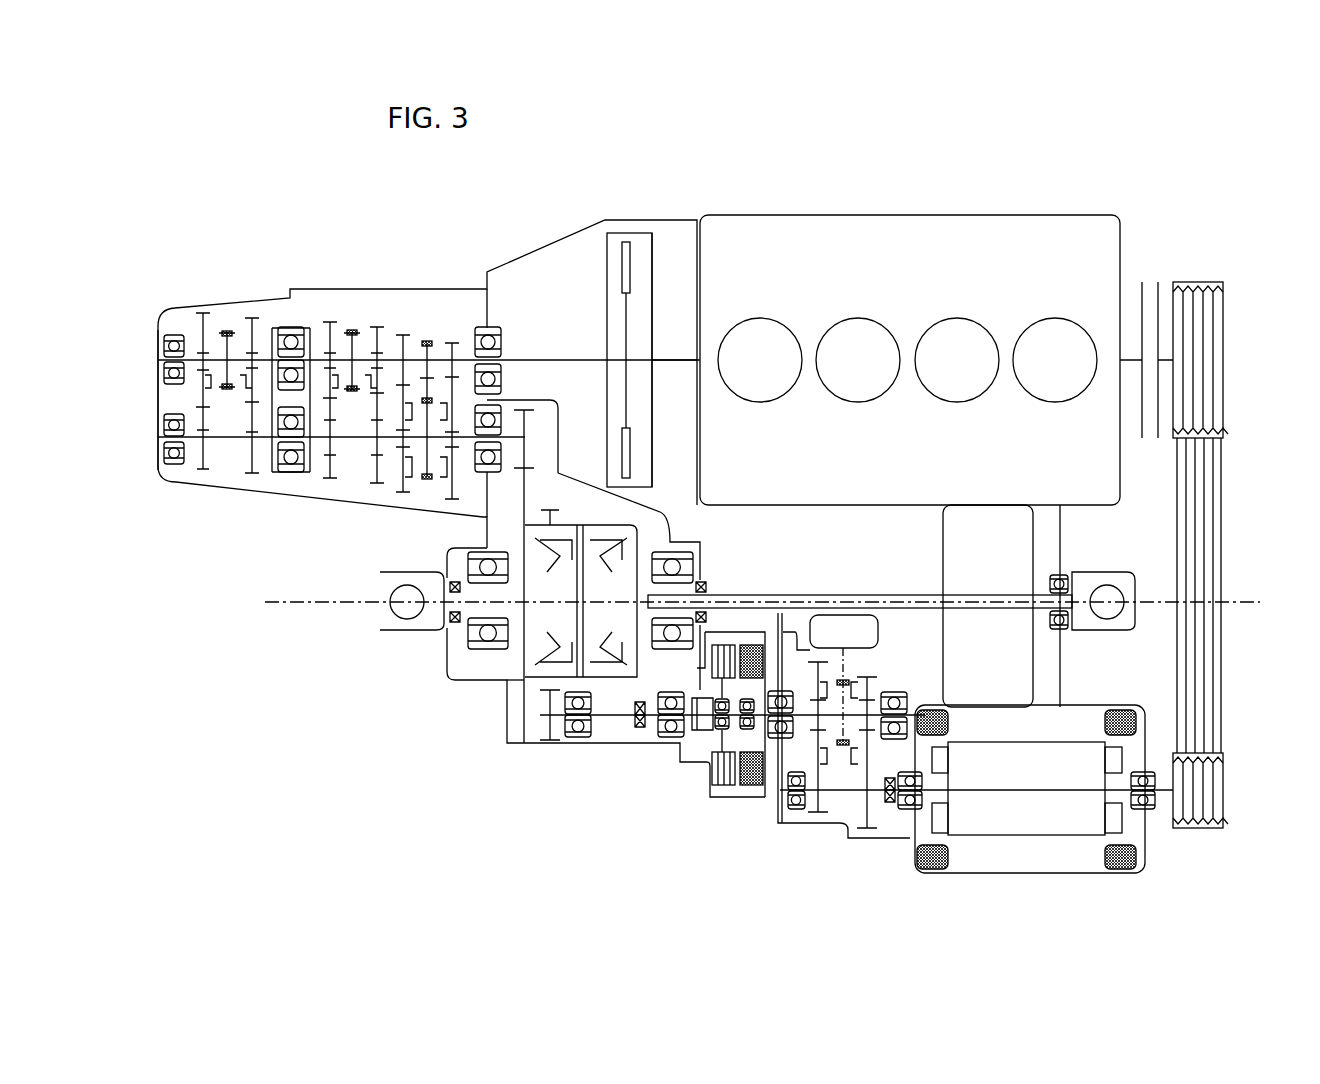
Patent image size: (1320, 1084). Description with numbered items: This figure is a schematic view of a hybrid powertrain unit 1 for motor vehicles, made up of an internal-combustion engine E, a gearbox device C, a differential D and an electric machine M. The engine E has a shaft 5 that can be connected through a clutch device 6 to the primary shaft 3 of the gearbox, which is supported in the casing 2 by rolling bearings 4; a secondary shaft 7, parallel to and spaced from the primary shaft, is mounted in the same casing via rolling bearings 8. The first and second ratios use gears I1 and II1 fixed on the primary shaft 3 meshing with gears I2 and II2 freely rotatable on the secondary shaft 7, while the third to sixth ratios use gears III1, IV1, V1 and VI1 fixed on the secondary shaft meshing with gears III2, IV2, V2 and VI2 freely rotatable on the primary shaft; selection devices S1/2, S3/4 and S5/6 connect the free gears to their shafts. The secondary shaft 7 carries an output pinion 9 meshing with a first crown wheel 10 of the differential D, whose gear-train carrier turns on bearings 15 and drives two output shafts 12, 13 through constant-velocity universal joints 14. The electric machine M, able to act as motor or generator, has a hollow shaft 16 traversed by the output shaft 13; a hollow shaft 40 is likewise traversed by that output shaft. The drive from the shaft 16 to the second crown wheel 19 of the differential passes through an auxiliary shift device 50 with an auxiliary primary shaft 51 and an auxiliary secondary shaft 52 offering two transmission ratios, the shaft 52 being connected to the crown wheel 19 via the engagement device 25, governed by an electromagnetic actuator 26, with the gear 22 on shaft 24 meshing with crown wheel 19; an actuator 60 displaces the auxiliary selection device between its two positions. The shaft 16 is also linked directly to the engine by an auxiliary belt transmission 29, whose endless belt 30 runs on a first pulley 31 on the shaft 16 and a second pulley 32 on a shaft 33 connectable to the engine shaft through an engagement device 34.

The hybrid powertrain unit 1 is at (212, 226).
The casing 2 is at (472, 275).
The primary shaft 3 is at (556, 357).
The rolling bearings 4 is at (160, 338).
The shaft of the engine 5 is at (688, 357).
The clutch device 6 is at (665, 258).
The secondary shaft 7 is at (226, 442).
The rolling bearings 8 is at (172, 452).
The output pinion 9 is at (525, 435).
The first crown wheel 10 is at (530, 494).
The output shaft 12 is at (470, 603).
The output shaft 13 is at (886, 590).
The constant-velocity universal joints 14 is at (406, 607).
The bearings 15 is at (673, 563).
The shaft of the electric machine 16 is at (1000, 793).
The second crown wheel 19 is at (560, 514).
The gear 22 is at (548, 725).
The shaft 24 is at (618, 712).
The engagement device 25 is at (719, 792).
The electromagnetic actuator 26 is at (753, 787).
The auxiliary belt transmission 29 is at (1236, 568).
The endless belt 30 is at (1205, 637).
The first pulley 31 is at (1215, 795).
The second pulley 32 is at (1208, 336).
The shaft 33 is at (1128, 366).
The engagement device 34 is at (1148, 278).
The hollow shaft 40 is at (790, 588).
The auxiliary shift device 50 is at (838, 830).
The auxiliary primary shaft 51 is at (852, 792).
The auxiliary secondary shaft 52 is at (866, 710).
The actuator 60 is at (862, 630).
The gearbox device C is at (155, 384).
The differential D is at (517, 664).
The internal-combustion engine E is at (1122, 232).
The housing H is at (992, 527).
The electric machine M is at (1043, 878).
The cylinder CY is at (834, 320).
The gear VI2 is at (198, 323).
The gear VI1 is at (201, 468).
The gear V2 is at (254, 335).
The gear V1 is at (250, 468).
The gear IV2 is at (330, 318).
The gear IV1 is at (338, 406).
The gear III2 is at (379, 320).
The gear III1 is at (374, 470).
The gear II1 is at (413, 341).
The gear II2 is at (404, 496).
The gear I1 is at (452, 341).
The gear I2 is at (430, 485).